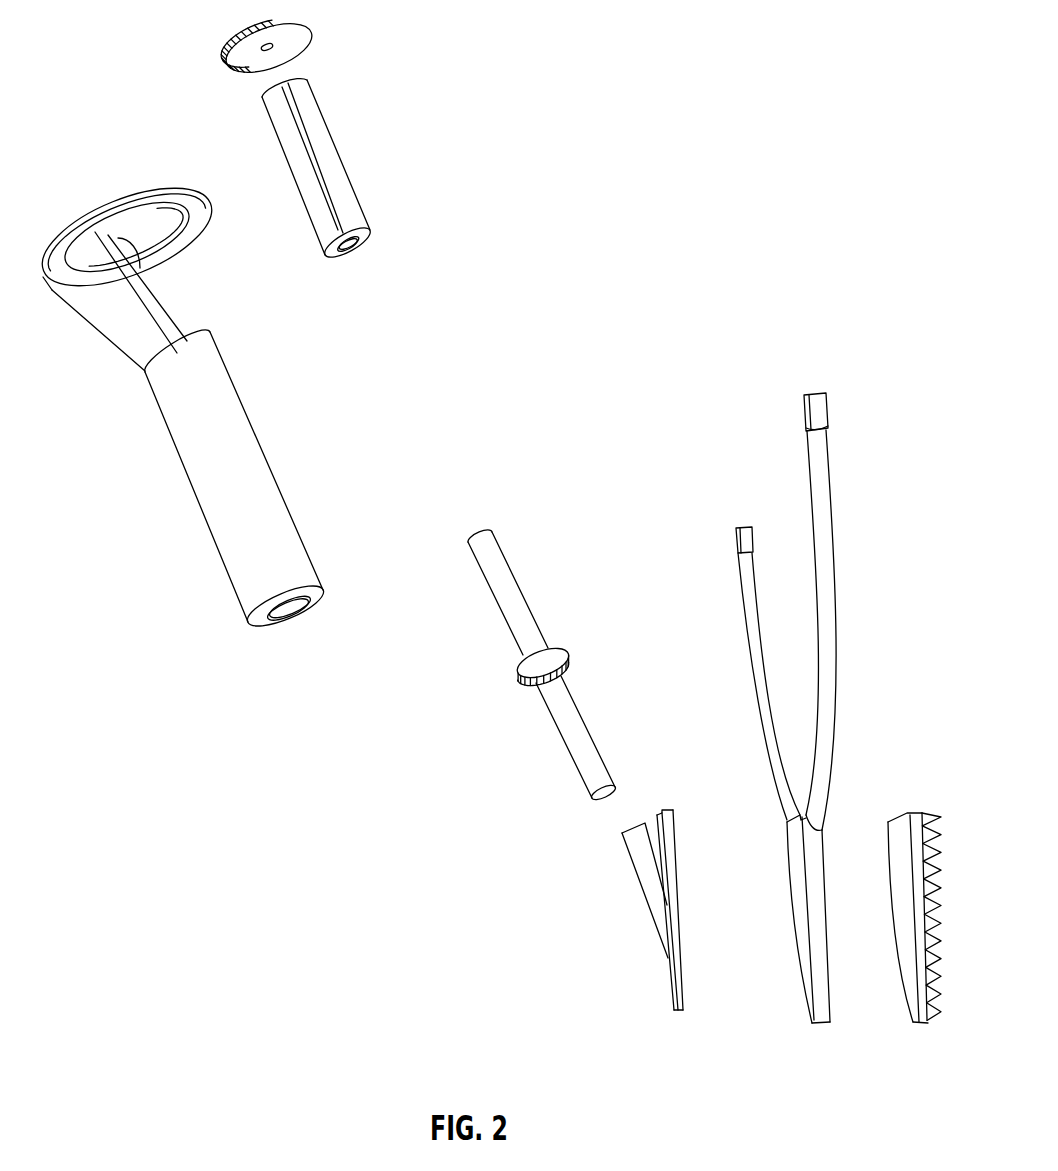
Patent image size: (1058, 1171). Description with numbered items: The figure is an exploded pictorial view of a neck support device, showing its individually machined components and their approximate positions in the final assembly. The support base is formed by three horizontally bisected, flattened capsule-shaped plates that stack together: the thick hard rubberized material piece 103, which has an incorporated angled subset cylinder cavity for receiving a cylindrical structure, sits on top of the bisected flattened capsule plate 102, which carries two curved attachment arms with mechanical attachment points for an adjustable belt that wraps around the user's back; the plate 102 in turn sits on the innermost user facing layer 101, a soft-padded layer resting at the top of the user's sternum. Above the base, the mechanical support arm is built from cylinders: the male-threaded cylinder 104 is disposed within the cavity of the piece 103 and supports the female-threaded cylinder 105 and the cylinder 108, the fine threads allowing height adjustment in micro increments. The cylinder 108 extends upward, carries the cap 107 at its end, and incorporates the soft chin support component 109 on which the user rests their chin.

The innermost user facing layer 101 is at (924, 947).
The bisected flattened capsule plate 102 is at (833, 571).
The thick hard rubberized material piece 103 is at (668, 970).
The cylinder 104 is at (567, 732).
The cylinder 105 is at (338, 163).
The cap 107 is at (310, 21).
The cylinder 108 is at (203, 491).
The soft chin support component 109 is at (93, 210).